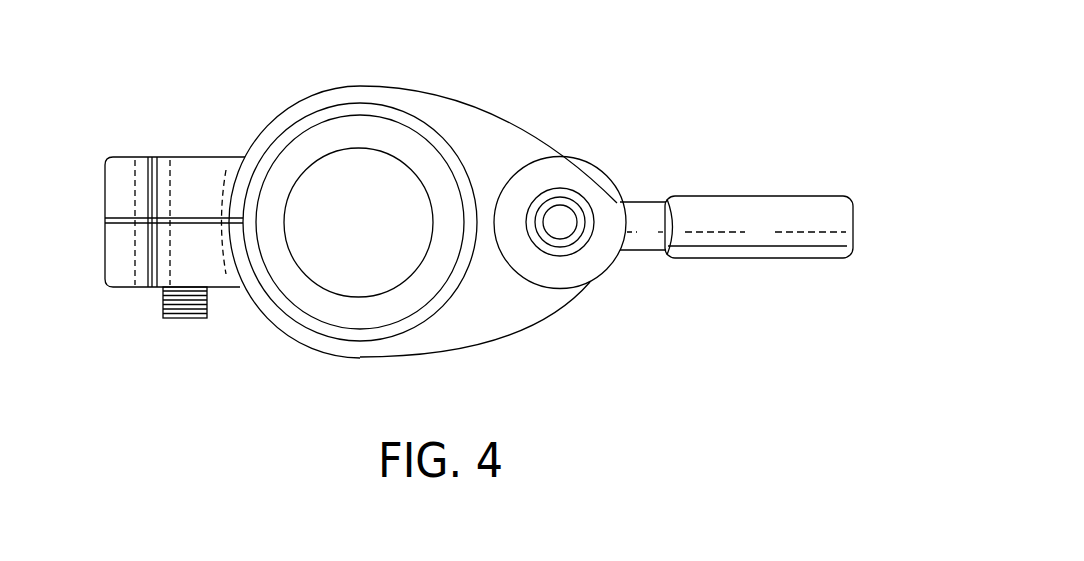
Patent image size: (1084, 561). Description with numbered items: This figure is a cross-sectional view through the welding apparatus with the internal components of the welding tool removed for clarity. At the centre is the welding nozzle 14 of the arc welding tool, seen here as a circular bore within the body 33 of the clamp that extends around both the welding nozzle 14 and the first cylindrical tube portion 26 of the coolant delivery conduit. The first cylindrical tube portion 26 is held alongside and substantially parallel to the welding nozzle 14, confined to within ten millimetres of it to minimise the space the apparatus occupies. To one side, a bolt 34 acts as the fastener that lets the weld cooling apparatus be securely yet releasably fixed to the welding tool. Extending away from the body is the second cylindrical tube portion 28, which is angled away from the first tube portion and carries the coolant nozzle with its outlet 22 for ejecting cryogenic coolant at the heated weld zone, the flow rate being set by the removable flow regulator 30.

The welding nozzle 14 is at (360, 320).
The outlet 22 is at (728, 247).
The first cylindrical tube portion 26 is at (558, 189).
The second cylindrical tube portion 28 is at (644, 212).
The removable flow regulator 30 is at (793, 241).
The body 33 is at (433, 108).
The bolt 34 is at (188, 303).